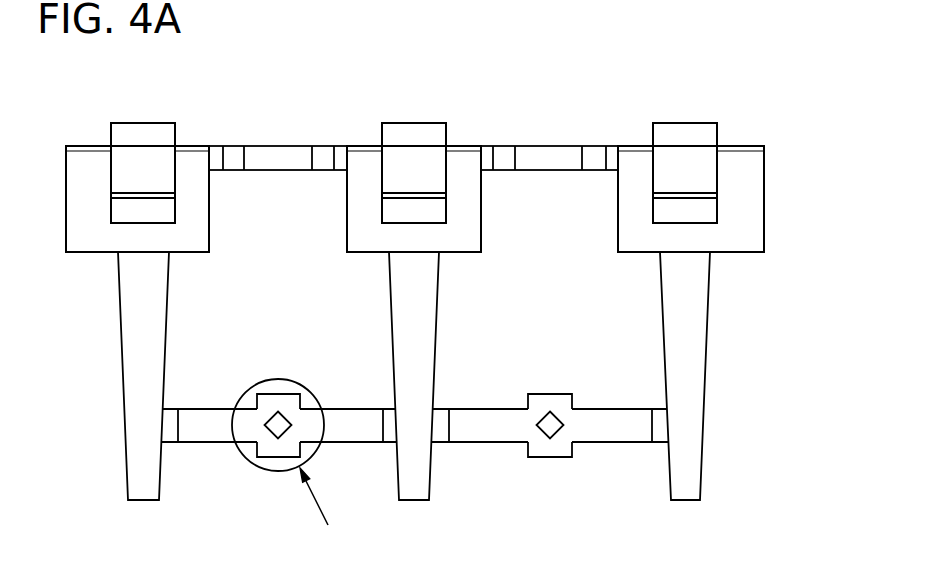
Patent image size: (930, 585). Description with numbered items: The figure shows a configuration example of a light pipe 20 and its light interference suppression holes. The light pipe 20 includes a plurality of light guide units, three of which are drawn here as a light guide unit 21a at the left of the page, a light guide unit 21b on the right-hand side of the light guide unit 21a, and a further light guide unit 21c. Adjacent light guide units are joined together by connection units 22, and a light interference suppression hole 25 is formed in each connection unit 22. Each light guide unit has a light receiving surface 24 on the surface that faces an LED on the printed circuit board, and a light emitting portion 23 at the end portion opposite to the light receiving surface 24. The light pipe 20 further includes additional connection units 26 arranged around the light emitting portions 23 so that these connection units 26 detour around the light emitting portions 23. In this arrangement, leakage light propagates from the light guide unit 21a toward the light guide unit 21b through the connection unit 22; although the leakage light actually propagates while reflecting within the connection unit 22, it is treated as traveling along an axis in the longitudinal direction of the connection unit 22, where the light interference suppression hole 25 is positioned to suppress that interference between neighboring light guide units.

The light pipe 20 is at (619, 38).
The light guide unit 21a is at (131, 304).
The light guide unit 21b is at (403, 304).
The light guide unit 21c is at (677, 304).
The connection unit 22 is at (213, 432).
The light emitting portion 23 is at (142, 168).
The light receiving surface 24 is at (142, 502).
The light interference suppression hole 25 is at (272, 434).
The connection unit 26 is at (277, 145).